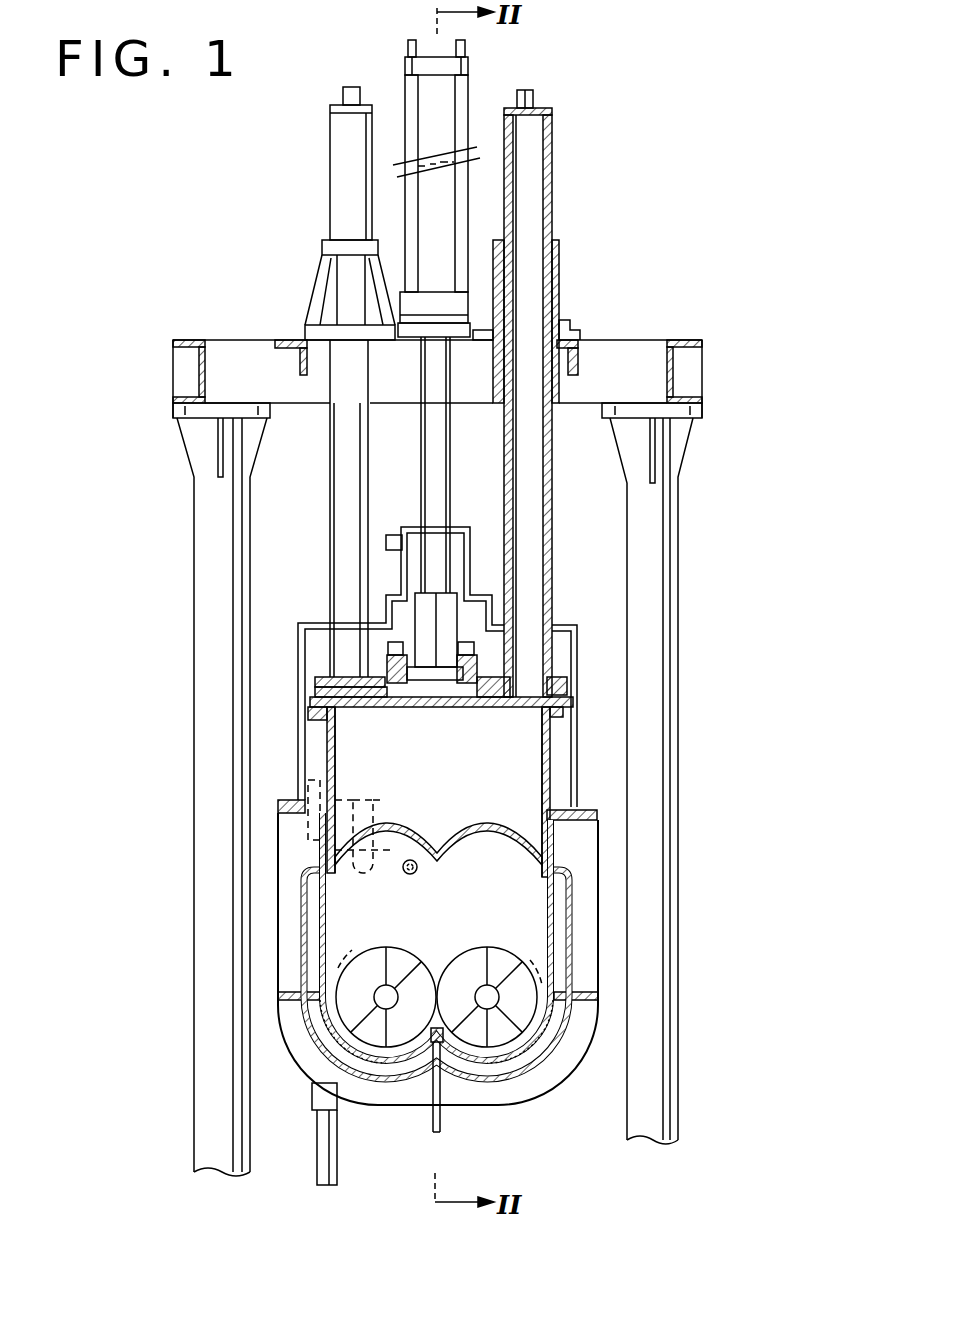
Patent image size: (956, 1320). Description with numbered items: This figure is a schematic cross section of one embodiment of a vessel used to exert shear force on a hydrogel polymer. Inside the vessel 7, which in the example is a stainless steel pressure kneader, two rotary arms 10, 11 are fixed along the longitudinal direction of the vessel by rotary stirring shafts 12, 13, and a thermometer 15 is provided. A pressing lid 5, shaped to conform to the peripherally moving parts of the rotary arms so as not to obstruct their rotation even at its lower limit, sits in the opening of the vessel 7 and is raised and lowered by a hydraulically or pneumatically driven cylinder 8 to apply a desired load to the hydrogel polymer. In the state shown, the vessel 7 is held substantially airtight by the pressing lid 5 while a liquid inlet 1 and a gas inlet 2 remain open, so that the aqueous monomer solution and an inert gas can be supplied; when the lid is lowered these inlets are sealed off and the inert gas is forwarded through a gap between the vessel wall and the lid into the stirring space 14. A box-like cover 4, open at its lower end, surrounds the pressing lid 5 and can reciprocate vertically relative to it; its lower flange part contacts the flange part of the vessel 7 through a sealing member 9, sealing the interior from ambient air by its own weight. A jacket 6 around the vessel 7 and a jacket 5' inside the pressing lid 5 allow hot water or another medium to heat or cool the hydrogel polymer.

The liquid inlet 1 is at (353, 806).
The gas inlet 2 is at (396, 889).
The cover 4 is at (577, 664).
The pressing lid 5 is at (471, 792).
The jacket inside the pressure lid 5' is at (477, 792).
The jacket 6 is at (560, 963).
The vessel 7 is at (555, 907).
The cylinder 8 is at (467, 98).
The sealing member 9 is at (597, 817).
The rotary arm 10 is at (475, 1032).
The rotary arm 11 is at (377, 1032).
The rotary stirring shaft 12 is at (505, 1005).
The rotary stirring shaft 13 is at (360, 1005).
The stirring space 14 is at (353, 920).
The thermometer 15 is at (437, 1042).